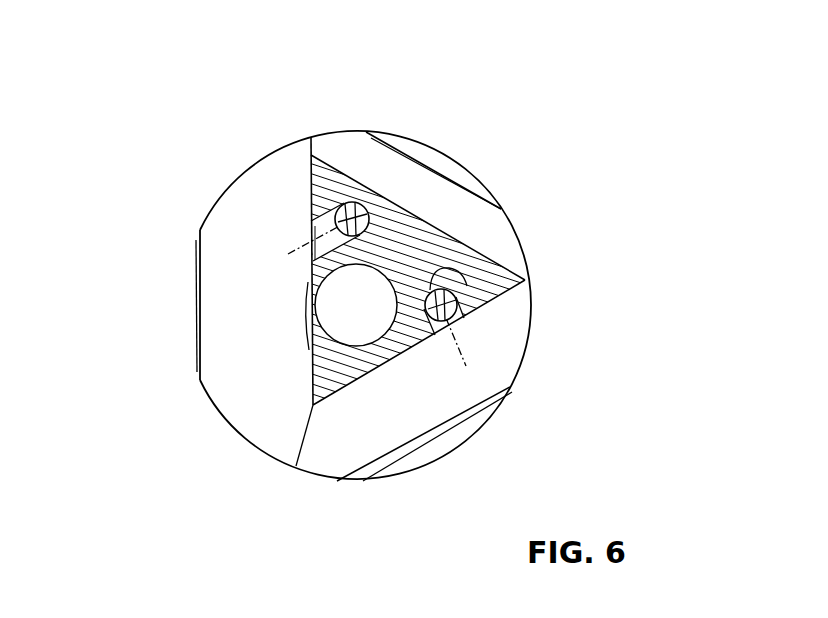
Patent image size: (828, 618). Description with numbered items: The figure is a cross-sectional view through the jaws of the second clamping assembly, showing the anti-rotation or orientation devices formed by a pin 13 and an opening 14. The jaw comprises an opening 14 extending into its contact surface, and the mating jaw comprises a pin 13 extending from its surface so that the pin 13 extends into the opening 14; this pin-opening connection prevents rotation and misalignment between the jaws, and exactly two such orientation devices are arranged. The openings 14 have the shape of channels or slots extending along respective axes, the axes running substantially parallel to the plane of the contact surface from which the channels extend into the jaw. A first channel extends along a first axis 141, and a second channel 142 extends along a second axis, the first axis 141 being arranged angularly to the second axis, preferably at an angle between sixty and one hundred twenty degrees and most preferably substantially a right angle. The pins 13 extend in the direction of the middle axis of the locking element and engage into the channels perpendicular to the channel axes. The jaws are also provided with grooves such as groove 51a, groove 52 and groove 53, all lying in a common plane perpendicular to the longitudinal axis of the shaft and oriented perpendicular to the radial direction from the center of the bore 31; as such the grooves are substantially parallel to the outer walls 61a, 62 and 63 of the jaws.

The pin 13 is at (364, 203).
The opening 14 is at (308, 198).
The bore 31 is at (302, 350).
The groove 51a is at (247, 270).
The groove 52 is at (390, 415).
The groove 53 is at (463, 227).
The outer wall 61a is at (200, 297).
The outer side wall 62 is at (450, 437).
The outer side wall 63 is at (441, 168).
The first axis 141 is at (475, 272).
The second channel 142 is at (292, 253).